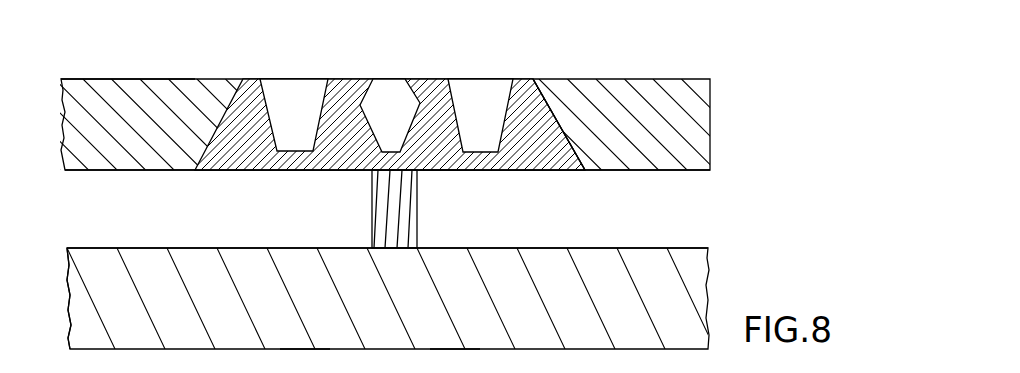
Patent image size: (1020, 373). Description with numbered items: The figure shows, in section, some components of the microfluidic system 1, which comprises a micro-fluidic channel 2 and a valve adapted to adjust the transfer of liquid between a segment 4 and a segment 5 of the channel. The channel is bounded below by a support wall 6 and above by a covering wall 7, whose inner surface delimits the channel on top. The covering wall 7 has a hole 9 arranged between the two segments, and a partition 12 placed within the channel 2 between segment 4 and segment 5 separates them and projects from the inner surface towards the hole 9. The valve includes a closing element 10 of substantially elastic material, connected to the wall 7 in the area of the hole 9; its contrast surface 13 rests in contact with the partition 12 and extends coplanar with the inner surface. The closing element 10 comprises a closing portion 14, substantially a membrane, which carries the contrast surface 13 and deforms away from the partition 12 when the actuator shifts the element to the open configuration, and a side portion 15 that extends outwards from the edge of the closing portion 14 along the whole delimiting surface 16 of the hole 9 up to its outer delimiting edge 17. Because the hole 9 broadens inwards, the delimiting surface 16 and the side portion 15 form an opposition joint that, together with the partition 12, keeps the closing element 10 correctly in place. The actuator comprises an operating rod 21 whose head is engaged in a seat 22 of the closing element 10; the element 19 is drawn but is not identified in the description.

The microfluidic system 1 is at (50, 372).
The micro-fluidic channel 2 is at (627, 165).
The segment 4 is at (136, 244).
The segment 5 is at (673, 176).
The support wall 6 is at (163, 342).
The covering wall 7 is at (132, 93).
The hole 9 is at (359, 72).
The closing element 10 is at (431, 67).
The partition 12 is at (383, 229).
The contrast surface 13 is at (345, 176).
The closing portion 14 is at (437, 158).
The side portion 15 is at (271, 98).
The delimiting surface 16 is at (557, 136).
The outer delimiting edge 17 is at (532, 74).
The second body region 19 is at (305, 361).
The operating rod 21 is at (455, 361).
The seat 22 is at (374, 116).